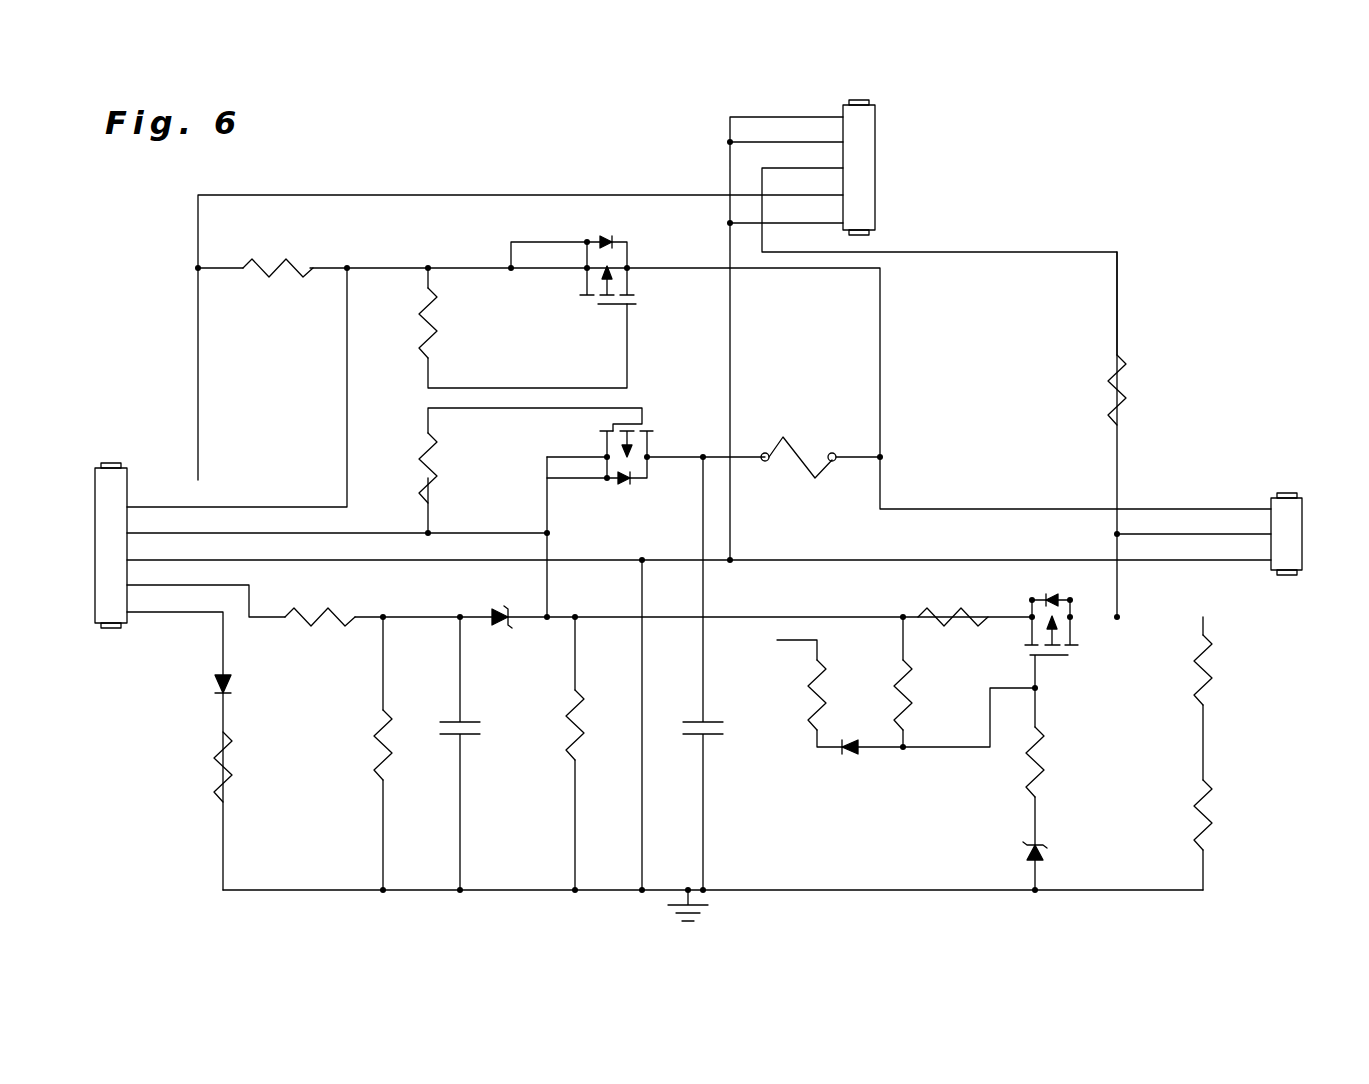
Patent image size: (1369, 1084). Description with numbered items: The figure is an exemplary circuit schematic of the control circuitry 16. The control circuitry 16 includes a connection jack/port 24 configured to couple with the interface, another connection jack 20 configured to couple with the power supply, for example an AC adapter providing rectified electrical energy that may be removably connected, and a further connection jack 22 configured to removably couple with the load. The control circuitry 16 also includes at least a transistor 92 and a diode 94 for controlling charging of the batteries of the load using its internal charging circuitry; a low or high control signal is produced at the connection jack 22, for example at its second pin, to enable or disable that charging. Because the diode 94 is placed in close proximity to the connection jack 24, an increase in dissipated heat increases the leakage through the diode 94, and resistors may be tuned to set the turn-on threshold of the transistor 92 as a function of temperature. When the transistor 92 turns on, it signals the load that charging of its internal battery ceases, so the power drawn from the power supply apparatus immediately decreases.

The control circuitry 16 is at (1194, 136).
The connection jack 20 is at (884, 154).
The connection jack 22 is at (1306, 548).
The connection jack/port 24 is at (92, 556).
The transistor 92 is at (1094, 639).
The diode 94 is at (1013, 857).